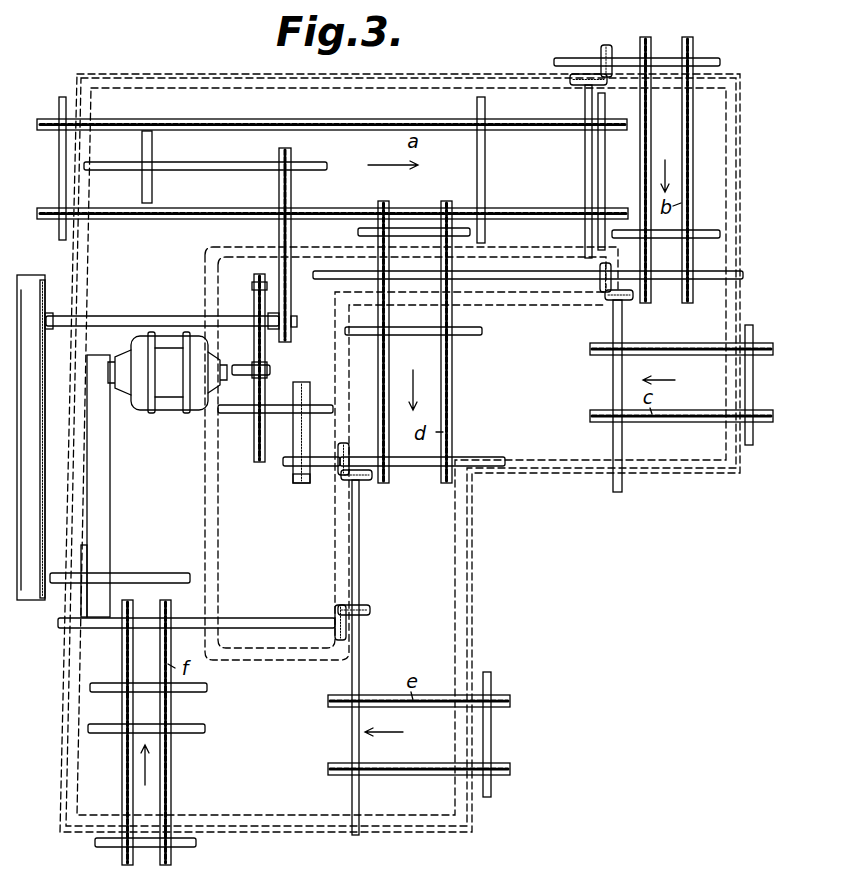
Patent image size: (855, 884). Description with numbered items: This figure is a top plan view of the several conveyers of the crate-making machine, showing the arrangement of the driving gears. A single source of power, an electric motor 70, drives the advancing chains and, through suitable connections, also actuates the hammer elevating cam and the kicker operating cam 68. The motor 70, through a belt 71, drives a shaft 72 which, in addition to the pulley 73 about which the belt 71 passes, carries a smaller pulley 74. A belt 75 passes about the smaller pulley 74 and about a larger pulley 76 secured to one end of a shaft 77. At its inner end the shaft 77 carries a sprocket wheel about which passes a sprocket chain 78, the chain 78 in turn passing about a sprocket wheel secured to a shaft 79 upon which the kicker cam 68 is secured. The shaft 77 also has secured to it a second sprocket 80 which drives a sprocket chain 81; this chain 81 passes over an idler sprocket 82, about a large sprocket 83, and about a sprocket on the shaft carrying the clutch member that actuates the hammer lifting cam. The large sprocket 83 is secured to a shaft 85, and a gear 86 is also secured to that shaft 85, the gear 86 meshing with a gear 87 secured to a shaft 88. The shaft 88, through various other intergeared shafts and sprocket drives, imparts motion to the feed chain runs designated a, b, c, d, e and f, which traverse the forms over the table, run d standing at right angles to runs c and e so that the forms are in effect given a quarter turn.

The kicker cam 68 is at (150, 143).
The electric motor 70 is at (170, 392).
The belt 71 is at (103, 493).
The shaft 72 is at (162, 573).
The pulley 73 is at (112, 548).
The smaller pulley 74 is at (42, 600).
The belt 75 is at (33, 437).
The larger pulley 76 is at (47, 290).
The shaft 77 is at (161, 316).
The sprocket chain 78 is at (292, 188).
The shaft 79 is at (222, 171).
The second sprocket 80 is at (290, 334).
The sprocket chain 81 is at (268, 395).
The idler sprocket 82 is at (264, 370).
The large sprocket 83 is at (258, 463).
The shaft 85 is at (236, 413).
The gear 86 is at (311, 386).
The gear 87 is at (256, 286).
The shaft 88 is at (406, 468).